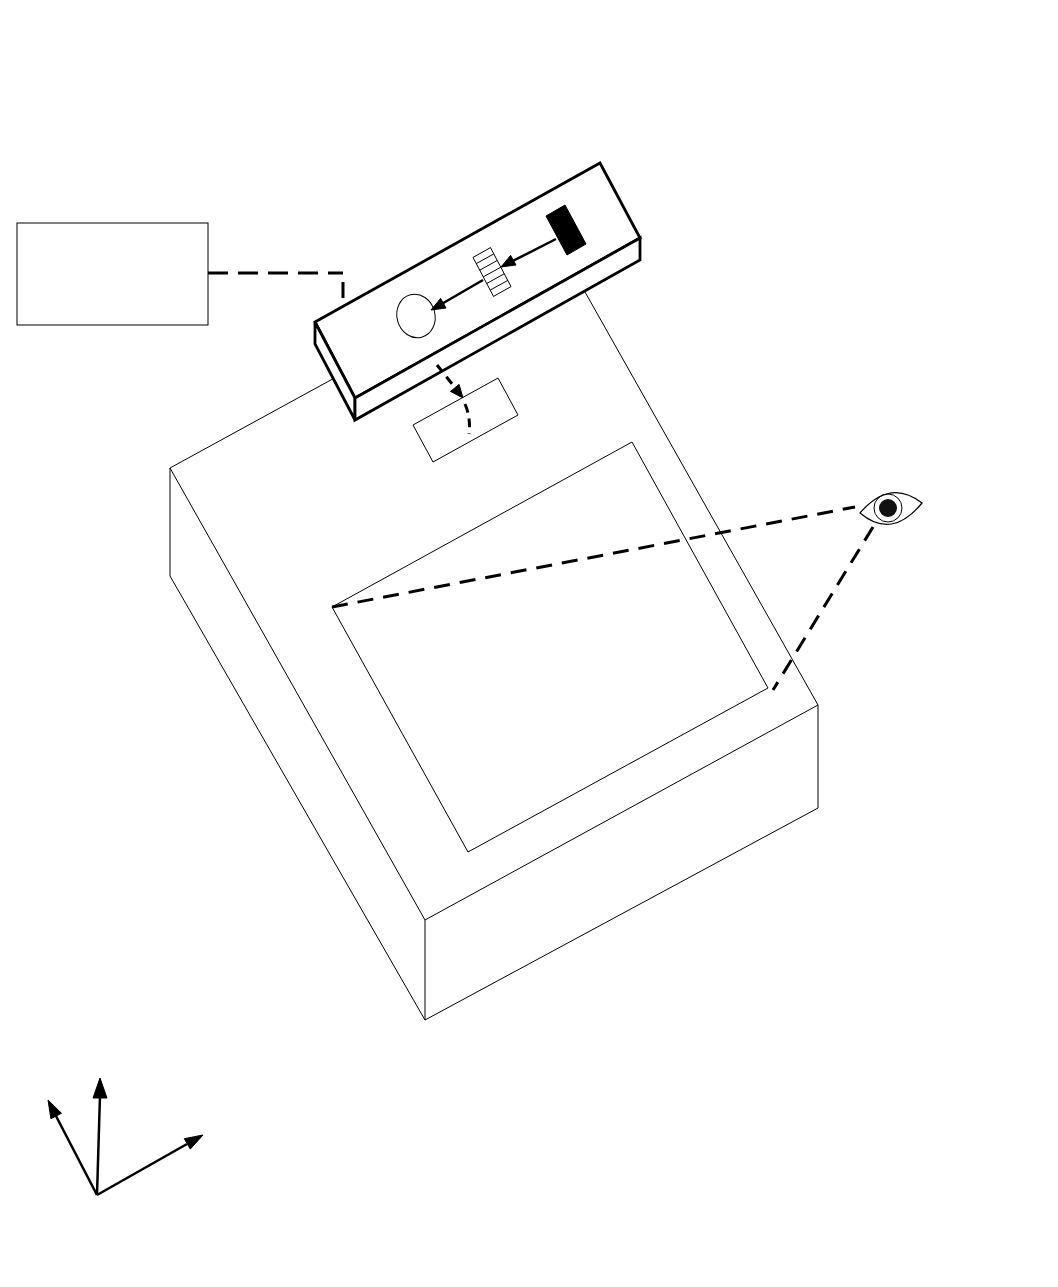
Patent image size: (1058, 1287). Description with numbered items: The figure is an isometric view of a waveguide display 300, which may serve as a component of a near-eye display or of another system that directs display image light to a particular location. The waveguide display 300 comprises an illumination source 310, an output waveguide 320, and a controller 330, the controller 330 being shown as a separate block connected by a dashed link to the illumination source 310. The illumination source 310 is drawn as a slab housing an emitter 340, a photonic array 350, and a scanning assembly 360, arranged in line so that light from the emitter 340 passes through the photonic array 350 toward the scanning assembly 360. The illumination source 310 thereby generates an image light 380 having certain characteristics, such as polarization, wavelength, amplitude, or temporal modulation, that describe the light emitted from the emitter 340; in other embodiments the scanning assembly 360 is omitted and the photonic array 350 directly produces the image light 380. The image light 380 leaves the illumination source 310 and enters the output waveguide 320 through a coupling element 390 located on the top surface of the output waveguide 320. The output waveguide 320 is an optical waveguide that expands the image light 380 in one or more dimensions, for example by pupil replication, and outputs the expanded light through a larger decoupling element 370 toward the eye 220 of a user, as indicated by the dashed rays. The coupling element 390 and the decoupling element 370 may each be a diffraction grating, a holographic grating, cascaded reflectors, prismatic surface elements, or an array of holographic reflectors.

The waveguide display 300 is at (62, 60).
The illumination source 310 is at (608, 228).
The output waveguide 320 is at (345, 773).
The controller 330 is at (92, 300).
The emitter 340 is at (562, 207).
The photonic array 350 is at (481, 255).
The scanning assembly 360 is at (405, 298).
The decoupling element 370 is at (462, 842).
The image light 380 is at (467, 410).
The coupling element 390 is at (518, 415).
The eye 220 is at (897, 553).